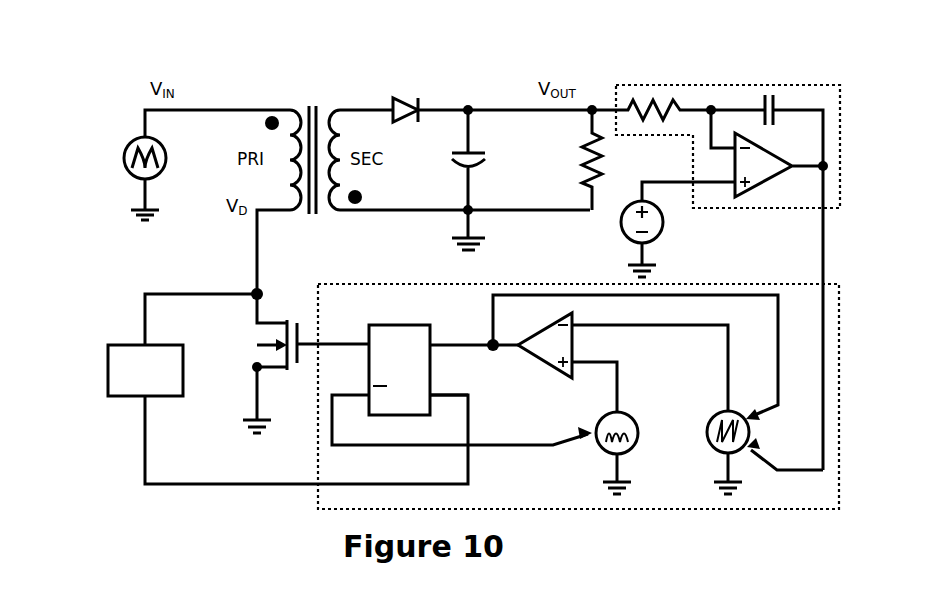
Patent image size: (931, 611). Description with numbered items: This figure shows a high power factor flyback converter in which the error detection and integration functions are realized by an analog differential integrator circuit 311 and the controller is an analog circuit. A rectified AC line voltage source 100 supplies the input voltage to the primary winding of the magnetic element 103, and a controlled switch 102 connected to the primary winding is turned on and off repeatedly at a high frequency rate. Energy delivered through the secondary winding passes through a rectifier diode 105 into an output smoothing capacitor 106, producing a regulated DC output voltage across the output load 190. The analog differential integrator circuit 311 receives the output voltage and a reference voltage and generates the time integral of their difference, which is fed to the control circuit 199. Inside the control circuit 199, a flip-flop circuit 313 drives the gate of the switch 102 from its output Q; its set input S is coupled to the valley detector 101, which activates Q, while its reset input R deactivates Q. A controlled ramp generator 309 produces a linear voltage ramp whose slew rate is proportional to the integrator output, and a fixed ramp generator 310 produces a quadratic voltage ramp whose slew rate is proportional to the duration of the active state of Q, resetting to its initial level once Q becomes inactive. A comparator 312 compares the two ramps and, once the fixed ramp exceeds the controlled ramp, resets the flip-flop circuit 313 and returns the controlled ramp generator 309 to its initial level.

The rectified AC line voltage source 100 is at (132, 132).
The valley detector 101 is at (130, 338).
The controlled switch 102 is at (247, 345).
The magnetic element 103 is at (313, 97).
The rectifier diode 105 is at (408, 98).
The output smoothing capacitor 106 is at (487, 158).
The output load 190 is at (570, 158).
The control circuit 199 is at (358, 280).
The controlled ramp generator 309 is at (718, 408).
The fixed ramp generator 310 is at (590, 423).
The analog differential integrator circuit 311 is at (782, 213).
The comparator 312 is at (527, 358).
The flip-flop circuit 313 is at (388, 322).